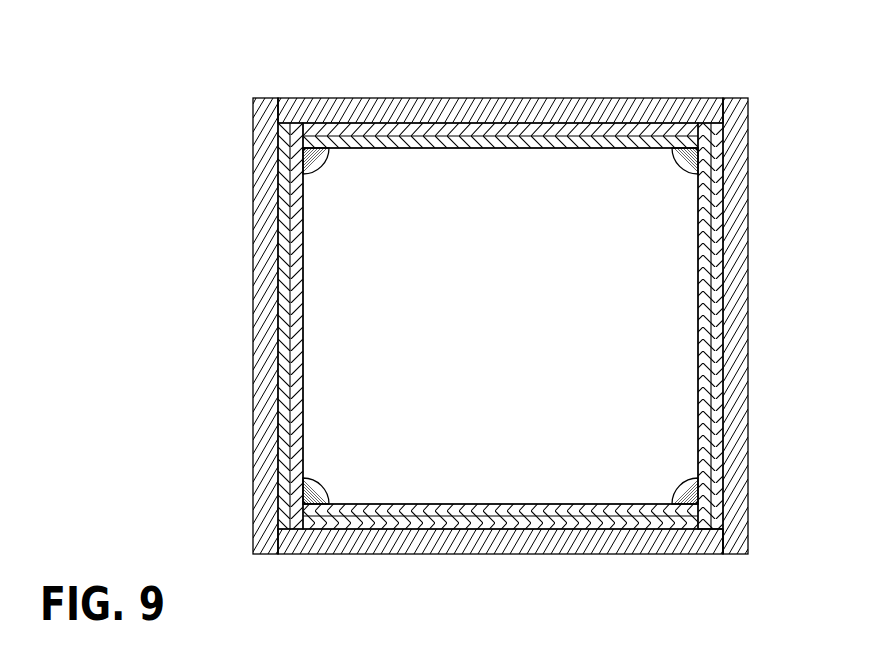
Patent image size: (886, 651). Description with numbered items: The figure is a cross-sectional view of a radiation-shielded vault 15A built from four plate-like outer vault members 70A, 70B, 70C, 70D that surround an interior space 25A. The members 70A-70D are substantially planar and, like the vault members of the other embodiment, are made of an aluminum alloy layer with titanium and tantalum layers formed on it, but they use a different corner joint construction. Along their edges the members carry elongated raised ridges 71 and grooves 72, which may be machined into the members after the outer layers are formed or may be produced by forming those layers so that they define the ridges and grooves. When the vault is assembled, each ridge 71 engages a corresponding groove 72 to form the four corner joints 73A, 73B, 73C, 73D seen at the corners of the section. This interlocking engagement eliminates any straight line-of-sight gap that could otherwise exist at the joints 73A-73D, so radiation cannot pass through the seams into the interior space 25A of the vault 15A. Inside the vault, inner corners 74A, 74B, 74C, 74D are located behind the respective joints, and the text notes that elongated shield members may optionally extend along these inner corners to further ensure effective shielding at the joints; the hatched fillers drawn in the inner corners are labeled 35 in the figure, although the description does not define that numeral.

The vault 15A is at (499, 332).
The interior space 25A is at (513, 345).
The corner filler material 35 is at (323, 152).
The outer vault member 70A is at (493, 556).
The outer vault member 70B is at (748, 274).
The outer vault member 70C is at (515, 98).
The outer vault member 70D is at (253, 285).
The elongated raised ridge 71 is at (722, 529).
The groove 72 is at (723, 540).
The joint 73A is at (723, 555).
The joint 73B is at (723, 97).
The joint 73C is at (278, 97).
The joint 73D is at (277, 555).
The inner corner 74A is at (681, 481).
The inner corner 74B is at (679, 166).
The inner corner 74C is at (316, 168).
The inner corner 74D is at (321, 486).